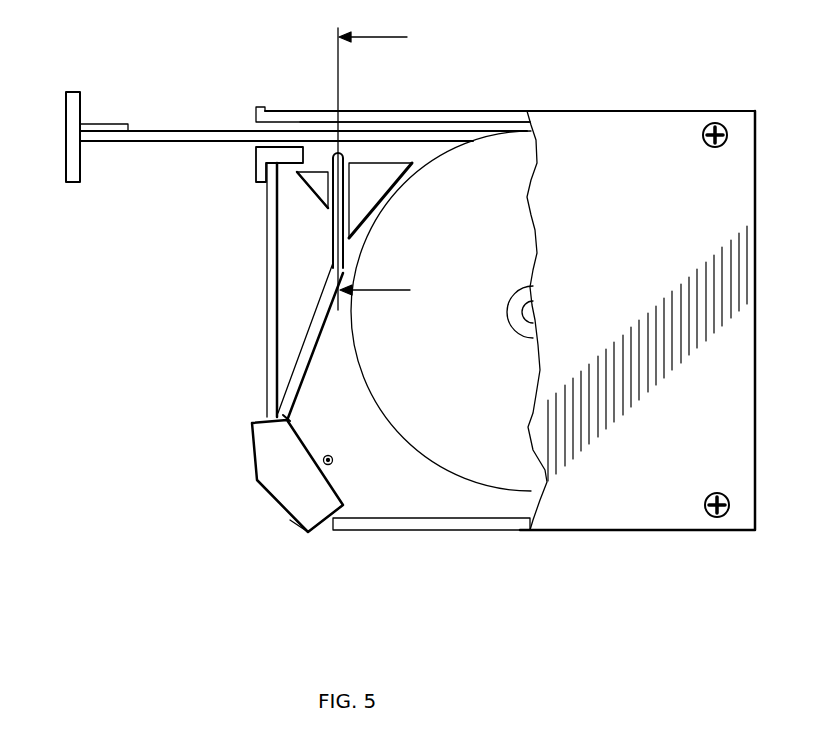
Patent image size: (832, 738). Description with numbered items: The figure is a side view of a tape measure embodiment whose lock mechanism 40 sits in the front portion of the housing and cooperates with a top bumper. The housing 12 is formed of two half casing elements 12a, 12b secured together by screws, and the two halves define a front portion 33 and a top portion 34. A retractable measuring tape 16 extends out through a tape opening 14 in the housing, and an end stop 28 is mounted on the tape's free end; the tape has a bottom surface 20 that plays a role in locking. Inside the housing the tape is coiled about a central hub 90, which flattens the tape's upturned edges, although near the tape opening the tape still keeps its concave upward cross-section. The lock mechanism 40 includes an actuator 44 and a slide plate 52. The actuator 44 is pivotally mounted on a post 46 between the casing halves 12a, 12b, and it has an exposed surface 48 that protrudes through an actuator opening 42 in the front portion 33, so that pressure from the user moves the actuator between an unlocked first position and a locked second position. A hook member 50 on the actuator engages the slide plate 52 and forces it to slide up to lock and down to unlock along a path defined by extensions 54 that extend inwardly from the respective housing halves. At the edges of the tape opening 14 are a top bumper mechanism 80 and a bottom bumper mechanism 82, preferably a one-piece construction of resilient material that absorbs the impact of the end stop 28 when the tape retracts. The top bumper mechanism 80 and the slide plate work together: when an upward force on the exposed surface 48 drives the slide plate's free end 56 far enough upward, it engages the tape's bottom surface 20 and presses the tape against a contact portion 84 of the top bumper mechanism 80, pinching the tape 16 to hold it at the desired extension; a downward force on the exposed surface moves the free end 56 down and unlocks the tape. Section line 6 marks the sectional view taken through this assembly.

The section line 6- 6 is at (382, 167).
The housing 12 is at (733, 163).
The half casing element 12a is at (632, 492).
The half casing element 12b is at (448, 505).
The tape opening 14 is at (258, 129).
The retractable measuring tape 16 is at (303, 139).
The bottom surface 20 is at (205, 143).
The end stop 28 is at (70, 153).
The front portion 33 is at (270, 297).
The top portion 34 is at (588, 111).
The lock mechanism 40 is at (279, 519).
The actuator opening 42 is at (323, 524).
The actuator 44 is at (283, 495).
The post 46 is at (333, 462).
The exposed surface 48 is at (295, 524).
The hook member 50 is at (288, 421).
The slide plate 52 is at (318, 328).
The extensions 54 is at (388, 170).
The free end 56 is at (345, 153).
The top bumper mechanism 80 is at (277, 117).
The bottom bumper mechanism 82 is at (258, 165).
The contact portion 84 is at (332, 121).
The central hub 90 is at (528, 313).